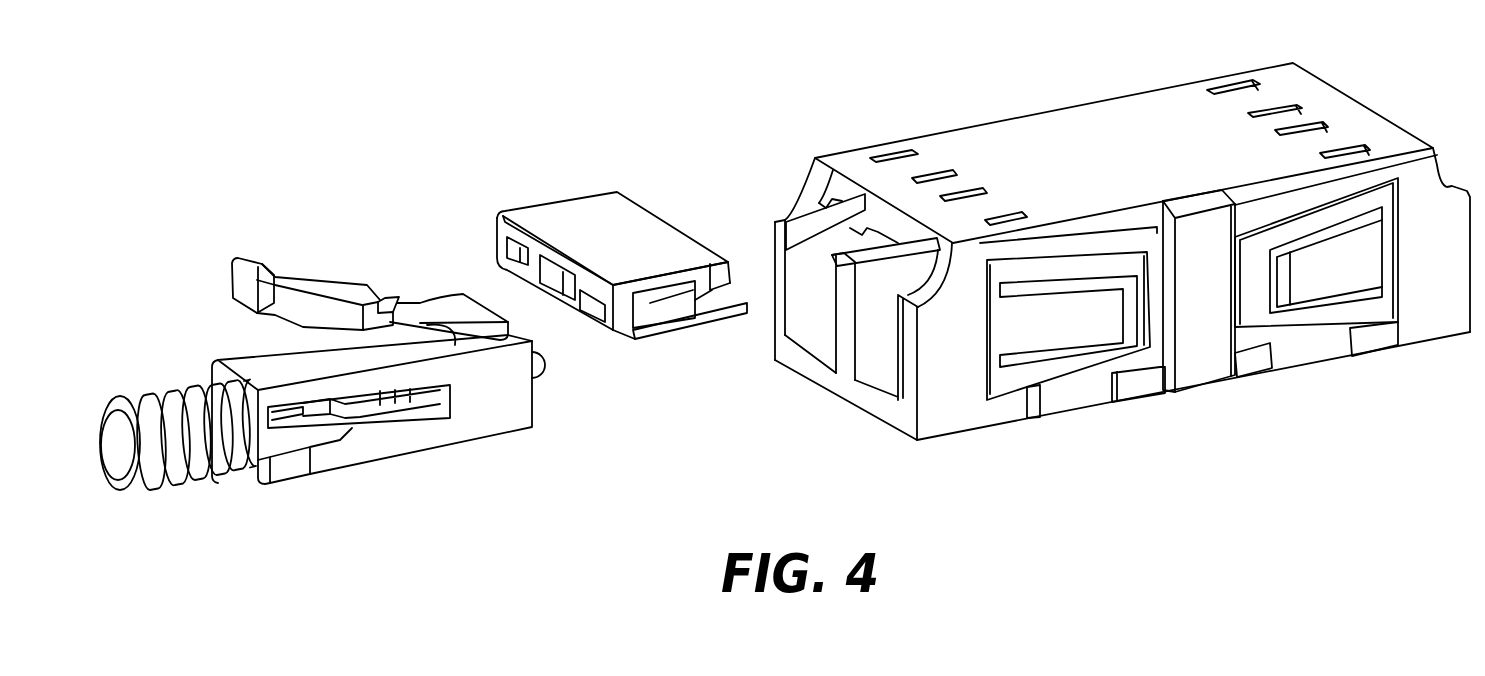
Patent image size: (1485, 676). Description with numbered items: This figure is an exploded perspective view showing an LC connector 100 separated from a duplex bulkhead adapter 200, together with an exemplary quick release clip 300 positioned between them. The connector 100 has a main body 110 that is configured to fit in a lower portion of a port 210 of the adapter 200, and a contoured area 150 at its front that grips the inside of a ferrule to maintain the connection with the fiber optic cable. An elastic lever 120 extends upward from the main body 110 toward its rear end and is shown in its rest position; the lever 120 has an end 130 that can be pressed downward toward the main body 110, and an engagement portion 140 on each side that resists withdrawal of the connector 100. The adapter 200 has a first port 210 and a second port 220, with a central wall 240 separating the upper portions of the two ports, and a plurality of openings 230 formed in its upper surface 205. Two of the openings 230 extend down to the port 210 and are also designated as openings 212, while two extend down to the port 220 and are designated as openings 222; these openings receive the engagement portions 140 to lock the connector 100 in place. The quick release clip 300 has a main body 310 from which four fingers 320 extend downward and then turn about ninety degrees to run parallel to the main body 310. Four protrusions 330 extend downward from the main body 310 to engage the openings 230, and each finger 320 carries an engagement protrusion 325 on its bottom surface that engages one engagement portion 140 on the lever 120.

The connector 100 is at (382, 447).
The main body 110 is at (498, 417).
The lever 120 is at (338, 308).
The end 130 is at (247, 278).
The engagement portion 140 is at (382, 318).
The contoured area 150 is at (170, 468).
The adapter 200 is at (1097, 133).
The upper surface 205 is at (1152, 153).
The port 210 is at (883, 380).
The opening 212 is at (1033, 217).
The port 220 is at (803, 283).
The opening 222 is at (955, 195).
The openings 230 is at (928, 175).
The central wall 240 is at (870, 280).
The quick release clip 300 is at (597, 205).
The main body 310 is at (630, 230).
The finger 320 is at (722, 323).
The engagement protrusion 325 is at (680, 330).
The protrusion 330 is at (712, 290).